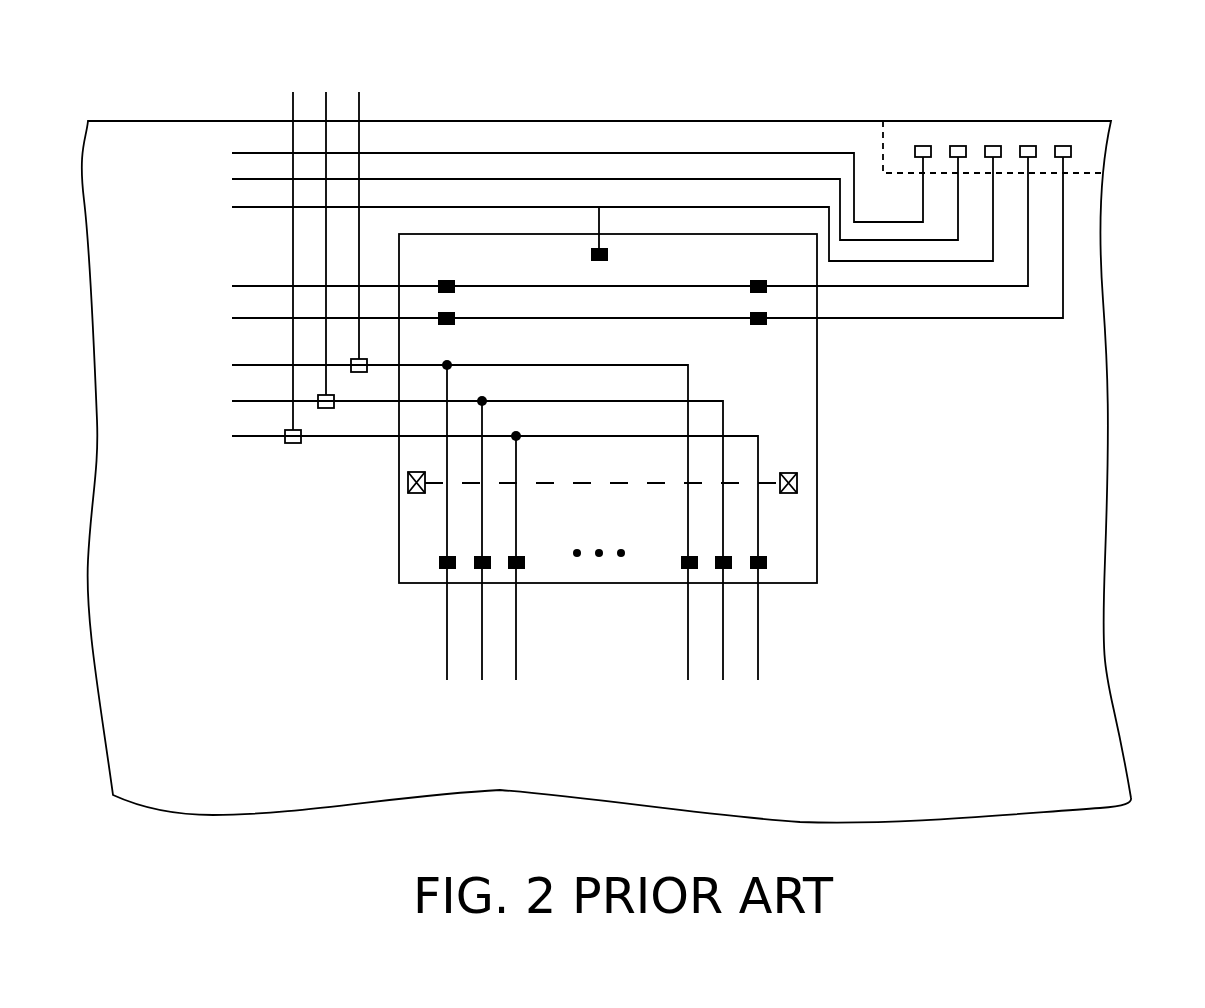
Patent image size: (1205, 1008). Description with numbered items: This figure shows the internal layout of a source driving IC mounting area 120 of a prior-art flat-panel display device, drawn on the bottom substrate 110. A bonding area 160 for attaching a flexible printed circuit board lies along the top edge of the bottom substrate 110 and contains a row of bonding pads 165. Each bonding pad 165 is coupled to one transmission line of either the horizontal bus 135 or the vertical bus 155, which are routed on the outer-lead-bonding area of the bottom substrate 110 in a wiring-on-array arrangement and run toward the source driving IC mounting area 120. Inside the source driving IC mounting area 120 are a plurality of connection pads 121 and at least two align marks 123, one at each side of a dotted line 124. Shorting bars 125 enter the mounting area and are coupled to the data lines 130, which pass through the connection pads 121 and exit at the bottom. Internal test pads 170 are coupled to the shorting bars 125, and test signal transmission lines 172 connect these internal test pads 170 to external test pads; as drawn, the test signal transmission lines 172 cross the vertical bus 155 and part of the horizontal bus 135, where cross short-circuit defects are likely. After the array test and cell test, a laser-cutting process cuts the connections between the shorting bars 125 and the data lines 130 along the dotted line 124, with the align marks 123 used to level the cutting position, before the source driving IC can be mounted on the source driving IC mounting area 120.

The bottom substrate 110 is at (1103, 260).
The source driving IC mounting area 120 is at (817, 562).
The connection pad 121 is at (607, 256).
The align mark 123 is at (413, 494).
The dotted line 124 is at (540, 482).
The shorting bar 125 is at (226, 361).
The data line 130 is at (440, 689).
The horizontal bus 135 is at (226, 203).
The vertical bus 155 is at (226, 148).
The bonding area 160 is at (887, 142).
The bonding pad 165 is at (958, 143).
The internal test pad 170 is at (291, 443).
The test signal transmission line 172 is at (286, 80).